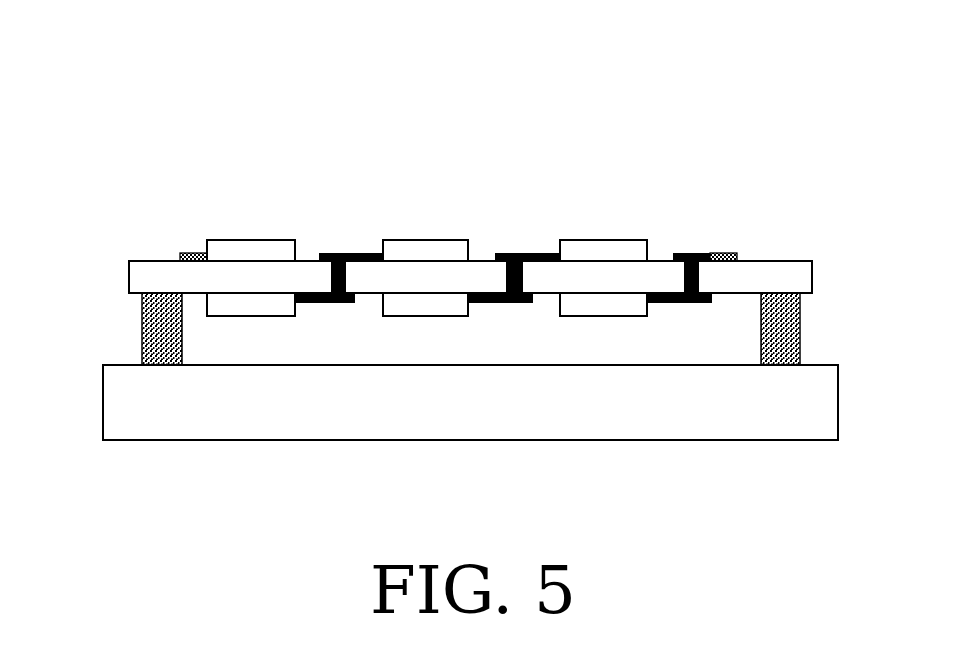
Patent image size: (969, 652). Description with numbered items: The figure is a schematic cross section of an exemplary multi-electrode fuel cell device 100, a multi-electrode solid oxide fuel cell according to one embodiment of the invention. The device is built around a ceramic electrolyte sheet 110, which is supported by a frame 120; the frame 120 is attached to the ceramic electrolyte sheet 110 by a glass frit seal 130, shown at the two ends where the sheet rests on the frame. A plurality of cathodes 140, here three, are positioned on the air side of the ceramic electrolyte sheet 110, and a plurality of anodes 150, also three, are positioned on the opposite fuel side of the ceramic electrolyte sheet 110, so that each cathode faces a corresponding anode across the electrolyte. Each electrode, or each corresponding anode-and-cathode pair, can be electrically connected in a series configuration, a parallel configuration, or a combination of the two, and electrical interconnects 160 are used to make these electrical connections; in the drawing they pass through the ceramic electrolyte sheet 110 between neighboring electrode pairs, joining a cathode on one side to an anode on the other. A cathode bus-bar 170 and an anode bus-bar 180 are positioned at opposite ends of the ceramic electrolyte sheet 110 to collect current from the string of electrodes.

The multi-electrode fuel cell device 100 is at (392, 58).
The ceramic electrolyte sheet 110 is at (470, 277).
The frame 120 is at (470, 402).
The glass frit seal 130 is at (138, 328).
The cathodes 140 is at (427, 250).
The anodes 150 is at (427, 304).
The electrical interconnects 160 is at (689, 250).
The cathode bus-bar 170 is at (194, 250).
The anode bus-bar 180 is at (725, 250).